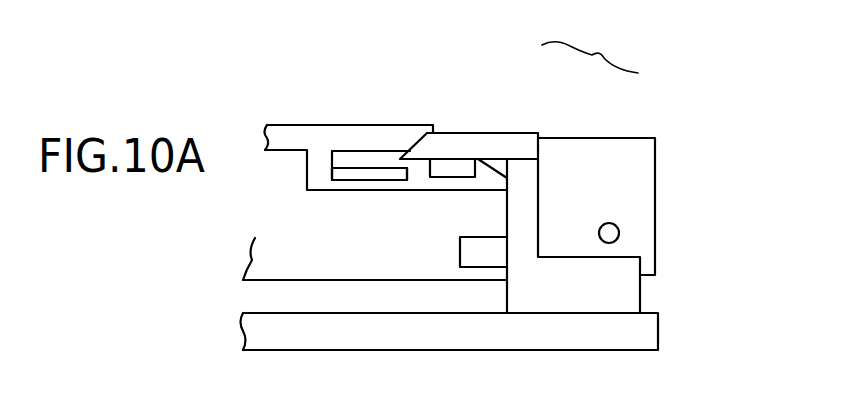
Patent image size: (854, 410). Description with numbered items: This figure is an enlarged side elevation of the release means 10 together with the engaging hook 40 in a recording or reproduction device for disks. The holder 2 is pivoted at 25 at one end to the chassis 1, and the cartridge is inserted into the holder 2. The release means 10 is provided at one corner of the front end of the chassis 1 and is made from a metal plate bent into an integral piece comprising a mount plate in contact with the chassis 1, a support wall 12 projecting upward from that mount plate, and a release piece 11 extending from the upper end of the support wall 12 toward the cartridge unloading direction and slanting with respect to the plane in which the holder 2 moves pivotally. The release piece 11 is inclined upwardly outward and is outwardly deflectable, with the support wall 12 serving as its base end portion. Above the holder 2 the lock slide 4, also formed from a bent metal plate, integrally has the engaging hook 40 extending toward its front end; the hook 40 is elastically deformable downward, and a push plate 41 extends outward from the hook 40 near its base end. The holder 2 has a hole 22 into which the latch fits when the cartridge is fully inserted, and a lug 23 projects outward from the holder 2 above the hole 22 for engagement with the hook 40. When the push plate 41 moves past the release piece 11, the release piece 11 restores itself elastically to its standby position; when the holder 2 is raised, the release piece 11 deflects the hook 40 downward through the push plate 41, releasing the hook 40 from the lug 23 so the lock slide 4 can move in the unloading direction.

The chassis 1 is at (647, 332).
The holder 2 is at (638, 173).
The lock slide 4 is at (320, 140).
The release means 10 is at (590, 45).
The release piece 11 is at (495, 148).
The support wall 12 is at (525, 192).
The hole 22 is at (460, 250).
The lug 23 is at (455, 172).
The pivot 25 is at (613, 230).
The engaging hook 40 is at (445, 165).
The push plate 41 is at (365, 172).